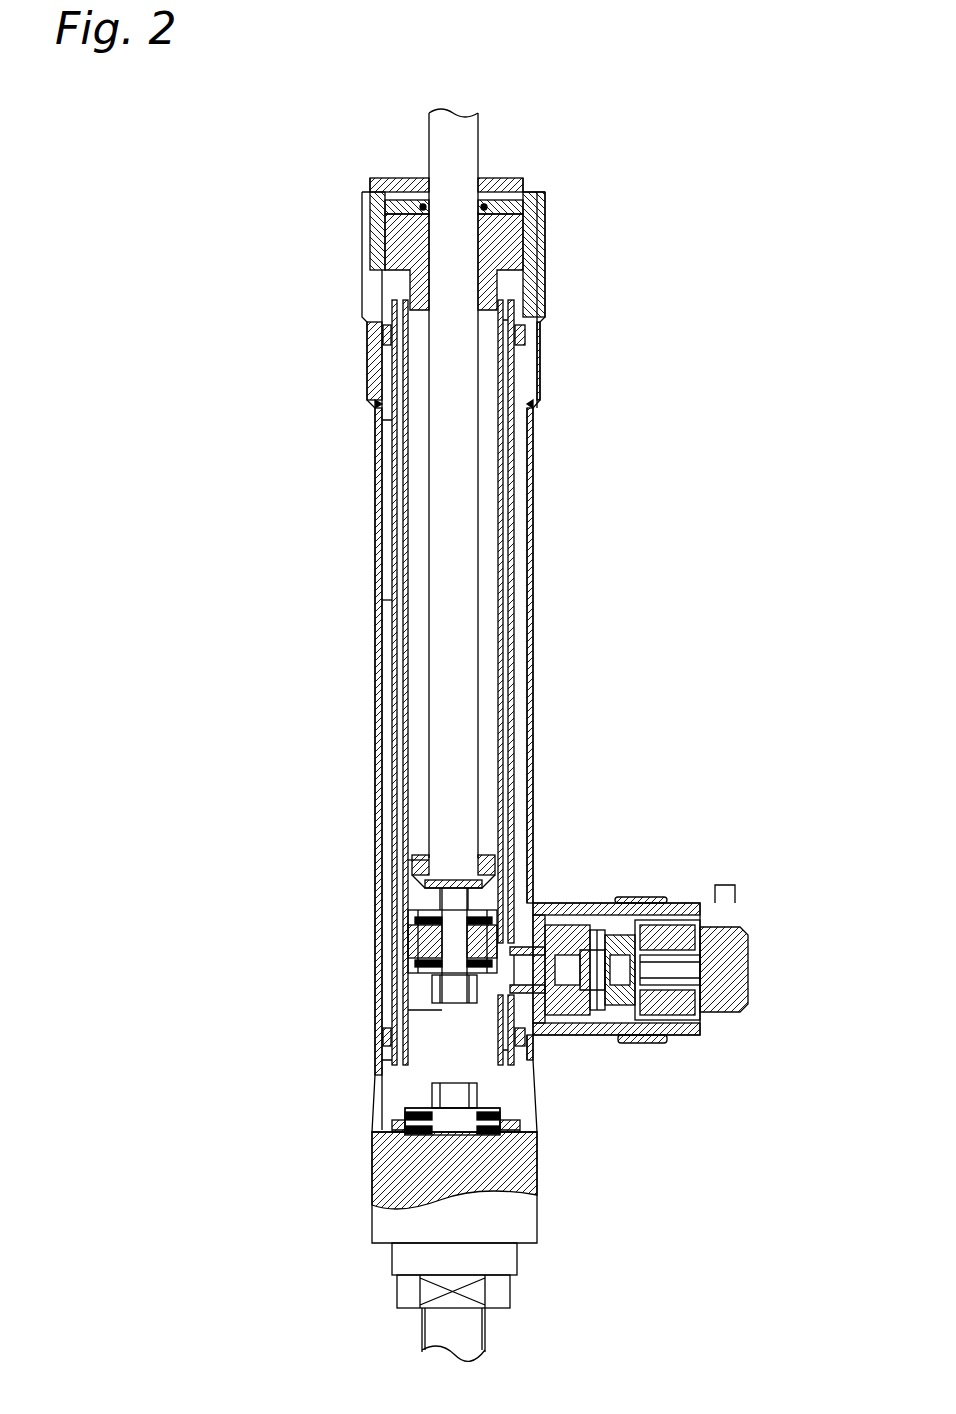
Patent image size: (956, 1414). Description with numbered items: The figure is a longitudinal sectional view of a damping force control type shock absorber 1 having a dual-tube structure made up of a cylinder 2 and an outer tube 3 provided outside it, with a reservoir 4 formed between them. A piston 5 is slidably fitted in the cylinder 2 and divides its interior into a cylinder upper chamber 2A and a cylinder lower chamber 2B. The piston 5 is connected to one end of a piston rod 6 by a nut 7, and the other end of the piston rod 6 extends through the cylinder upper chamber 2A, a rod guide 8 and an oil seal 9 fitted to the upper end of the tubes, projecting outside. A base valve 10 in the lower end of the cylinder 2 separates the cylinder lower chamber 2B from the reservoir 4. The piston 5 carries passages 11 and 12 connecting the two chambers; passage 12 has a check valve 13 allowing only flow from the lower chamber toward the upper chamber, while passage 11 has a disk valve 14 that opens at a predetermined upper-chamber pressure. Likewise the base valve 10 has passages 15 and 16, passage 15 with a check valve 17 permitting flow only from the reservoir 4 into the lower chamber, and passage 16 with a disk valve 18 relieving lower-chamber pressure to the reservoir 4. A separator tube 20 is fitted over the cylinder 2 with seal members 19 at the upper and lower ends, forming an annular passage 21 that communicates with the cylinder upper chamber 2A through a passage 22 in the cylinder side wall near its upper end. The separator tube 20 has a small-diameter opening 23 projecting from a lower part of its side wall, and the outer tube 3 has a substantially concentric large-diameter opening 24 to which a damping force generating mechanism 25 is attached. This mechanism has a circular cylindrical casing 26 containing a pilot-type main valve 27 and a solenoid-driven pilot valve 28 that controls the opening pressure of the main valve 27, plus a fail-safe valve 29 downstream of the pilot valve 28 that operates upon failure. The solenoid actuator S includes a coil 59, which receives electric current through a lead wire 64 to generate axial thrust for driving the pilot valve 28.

The damping force control type shock absorber 1 is at (610, 262).
The cylinder 2 is at (503, 487).
The cylinder upper chamber 2A is at (415, 735).
The cylinder lower chamber 2B is at (418, 1072).
The outer tube 3 is at (534, 578).
The reservoir 4 is at (383, 500).
The piston 5 is at (410, 946).
The piston rod 6 is at (472, 143).
The nut 7 is at (430, 1000).
The rod guide 8 is at (400, 295).
The oil seal 9 is at (513, 202).
The base valve 10 is at (525, 1137).
The passage 11 is at (420, 918).
The passage 12 is at (495, 925).
The check valve 13 is at (492, 912).
The disk valve 14 is at (425, 963).
The passage 15 is at (380, 1135).
The passage 16 is at (537, 1178).
The check valve 17 is at (407, 1110).
The disk valve 18 is at (537, 1207).
The seal member 19 is at (400, 335).
The separator tube 20 is at (383, 588).
The annular passage 21 is at (518, 538).
The passage 22 is at (505, 362).
The small-diameter opening 23 is at (557, 903).
The large-diameter opening 24 is at (552, 1038).
The damping force generating mechanism 25 is at (613, 891).
The casing 26 is at (588, 903).
The main valve 27 is at (585, 1038).
The pilot valve 28 is at (635, 1043).
The fail-safe valve 29 is at (667, 1042).
The coil 59 is at (673, 903).
The lead wire 64 is at (733, 902).
The solenoid actuator S is at (693, 1030).